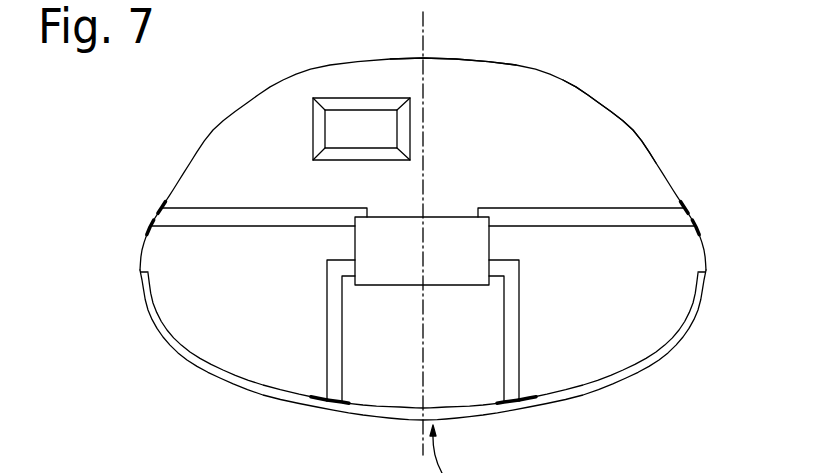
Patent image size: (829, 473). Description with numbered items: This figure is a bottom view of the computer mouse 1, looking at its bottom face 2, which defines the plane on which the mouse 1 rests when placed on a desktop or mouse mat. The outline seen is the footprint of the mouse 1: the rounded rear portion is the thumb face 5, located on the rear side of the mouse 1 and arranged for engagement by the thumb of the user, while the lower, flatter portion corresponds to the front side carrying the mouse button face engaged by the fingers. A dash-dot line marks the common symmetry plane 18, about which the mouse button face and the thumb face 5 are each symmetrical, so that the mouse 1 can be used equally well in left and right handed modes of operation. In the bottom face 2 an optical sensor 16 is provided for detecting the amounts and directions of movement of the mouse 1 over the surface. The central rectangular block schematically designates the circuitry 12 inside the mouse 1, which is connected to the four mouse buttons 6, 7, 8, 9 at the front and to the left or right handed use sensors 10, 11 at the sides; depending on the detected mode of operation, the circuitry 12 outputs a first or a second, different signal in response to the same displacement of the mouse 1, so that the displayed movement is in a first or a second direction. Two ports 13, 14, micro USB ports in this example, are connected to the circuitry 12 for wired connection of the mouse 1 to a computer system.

The computer mouse 1 is at (588, 79).
The bottom face 2 is at (598, 144).
The thumb face 5 is at (499, 56).
The common symmetry plane 18 is at (423, 44).
The optical sensor 16 is at (348, 118).
The circuitry 12 is at (442, 229).
The port 14 is at (161, 207).
The left or right handed use sensor 11 is at (149, 228).
The port 13 is at (687, 208).
The left or right handed use sensor 10 is at (696, 224).
The mouse button 9 is at (318, 407).
The mouse button 8 is at (343, 407).
The mouse button 7 is at (503, 407).
The mouse button 6 is at (528, 403).